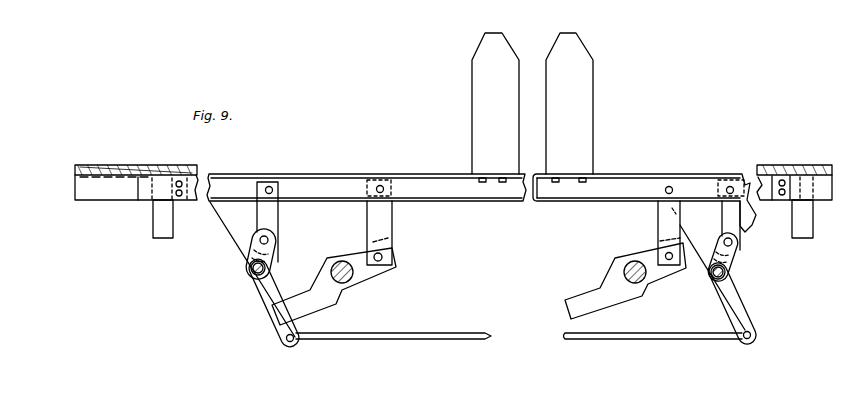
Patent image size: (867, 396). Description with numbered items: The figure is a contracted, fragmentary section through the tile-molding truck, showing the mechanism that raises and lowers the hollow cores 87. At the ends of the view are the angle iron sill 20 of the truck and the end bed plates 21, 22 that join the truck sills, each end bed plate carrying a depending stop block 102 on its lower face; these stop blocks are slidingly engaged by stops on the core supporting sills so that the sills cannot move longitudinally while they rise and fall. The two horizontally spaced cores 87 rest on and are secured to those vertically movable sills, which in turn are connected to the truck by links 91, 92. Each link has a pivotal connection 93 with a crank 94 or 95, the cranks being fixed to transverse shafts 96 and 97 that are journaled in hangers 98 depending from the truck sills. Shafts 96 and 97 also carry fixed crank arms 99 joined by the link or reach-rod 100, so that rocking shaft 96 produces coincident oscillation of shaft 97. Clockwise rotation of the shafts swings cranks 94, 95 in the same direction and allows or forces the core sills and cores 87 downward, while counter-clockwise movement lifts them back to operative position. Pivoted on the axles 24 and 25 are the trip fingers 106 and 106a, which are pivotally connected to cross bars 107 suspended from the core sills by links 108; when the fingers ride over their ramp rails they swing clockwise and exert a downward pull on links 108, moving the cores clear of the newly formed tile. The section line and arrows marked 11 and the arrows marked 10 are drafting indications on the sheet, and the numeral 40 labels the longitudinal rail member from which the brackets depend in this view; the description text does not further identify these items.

The angle iron sill 20 is at (88, 190).
The end bed plate 21 is at (118, 165).
The end bed plate 22 is at (776, 165).
The direction arrow 10 is at (100, 177).
The section line 11 is at (412, 228).
The axle 24 is at (340, 262).
The axle 25 is at (630, 266).
The rail 40 is at (445, 180).
The hollow core 87 is at (492, 75).
The link 91 is at (272, 216).
The link 92 is at (724, 208).
The pivotal connection 93 is at (252, 246).
The crank 94 is at (255, 266).
The crank 95 is at (737, 262).
The transverse shaft 96 is at (254, 273).
The transverse shaft 97 is at (711, 274).
The hanger 98 is at (703, 210).
The crank arm 99 is at (264, 297).
The link or reach-rod 100 is at (460, 332).
The stop block 102 is at (157, 222).
The trip finger or lever 106 is at (335, 296).
The trip finger or lever 106a is at (590, 287).
The cross bar 107 is at (382, 257).
The link 108 is at (383, 220).